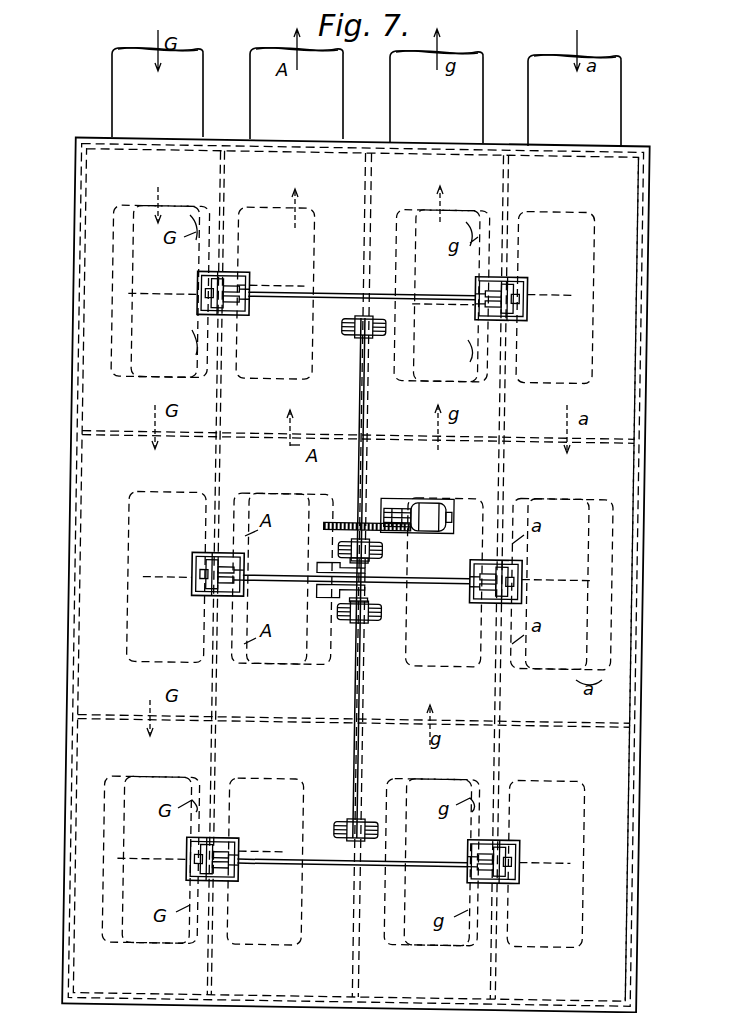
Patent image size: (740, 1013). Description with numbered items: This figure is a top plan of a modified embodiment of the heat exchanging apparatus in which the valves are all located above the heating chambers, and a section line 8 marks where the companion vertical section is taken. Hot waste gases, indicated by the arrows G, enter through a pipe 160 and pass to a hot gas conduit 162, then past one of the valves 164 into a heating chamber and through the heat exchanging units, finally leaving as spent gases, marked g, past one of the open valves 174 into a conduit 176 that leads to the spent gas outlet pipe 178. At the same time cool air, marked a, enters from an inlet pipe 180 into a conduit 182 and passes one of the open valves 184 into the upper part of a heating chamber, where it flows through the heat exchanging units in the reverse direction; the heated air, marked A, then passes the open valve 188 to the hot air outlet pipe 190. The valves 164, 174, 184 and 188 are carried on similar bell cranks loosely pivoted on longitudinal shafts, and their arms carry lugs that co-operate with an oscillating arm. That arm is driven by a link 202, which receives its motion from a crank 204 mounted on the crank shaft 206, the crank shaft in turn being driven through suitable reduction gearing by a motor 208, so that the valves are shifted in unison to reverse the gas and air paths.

The pipe 160 is at (157, 92).
The hot air outlet pipe 190 is at (296, 93).
The spent gas outlet pipe 178 is at (436, 97).
The inlet pipe 180 is at (574, 100).
The hot gas conduit 162 is at (74, 192).
The conduit 182 is at (650, 702).
The valve 164 is at (176, 652).
The valve 188 is at (294, 668).
The valve 174 is at (452, 672).
The valve 184 is at (548, 672).
The conduit 176 is at (482, 730).
The link 202 is at (275, 580).
The crank 204 is at (340, 593).
The crank shaft 206 is at (362, 650).
The motor 208 is at (432, 507).
The section line 8— 8 is at (62, 585).